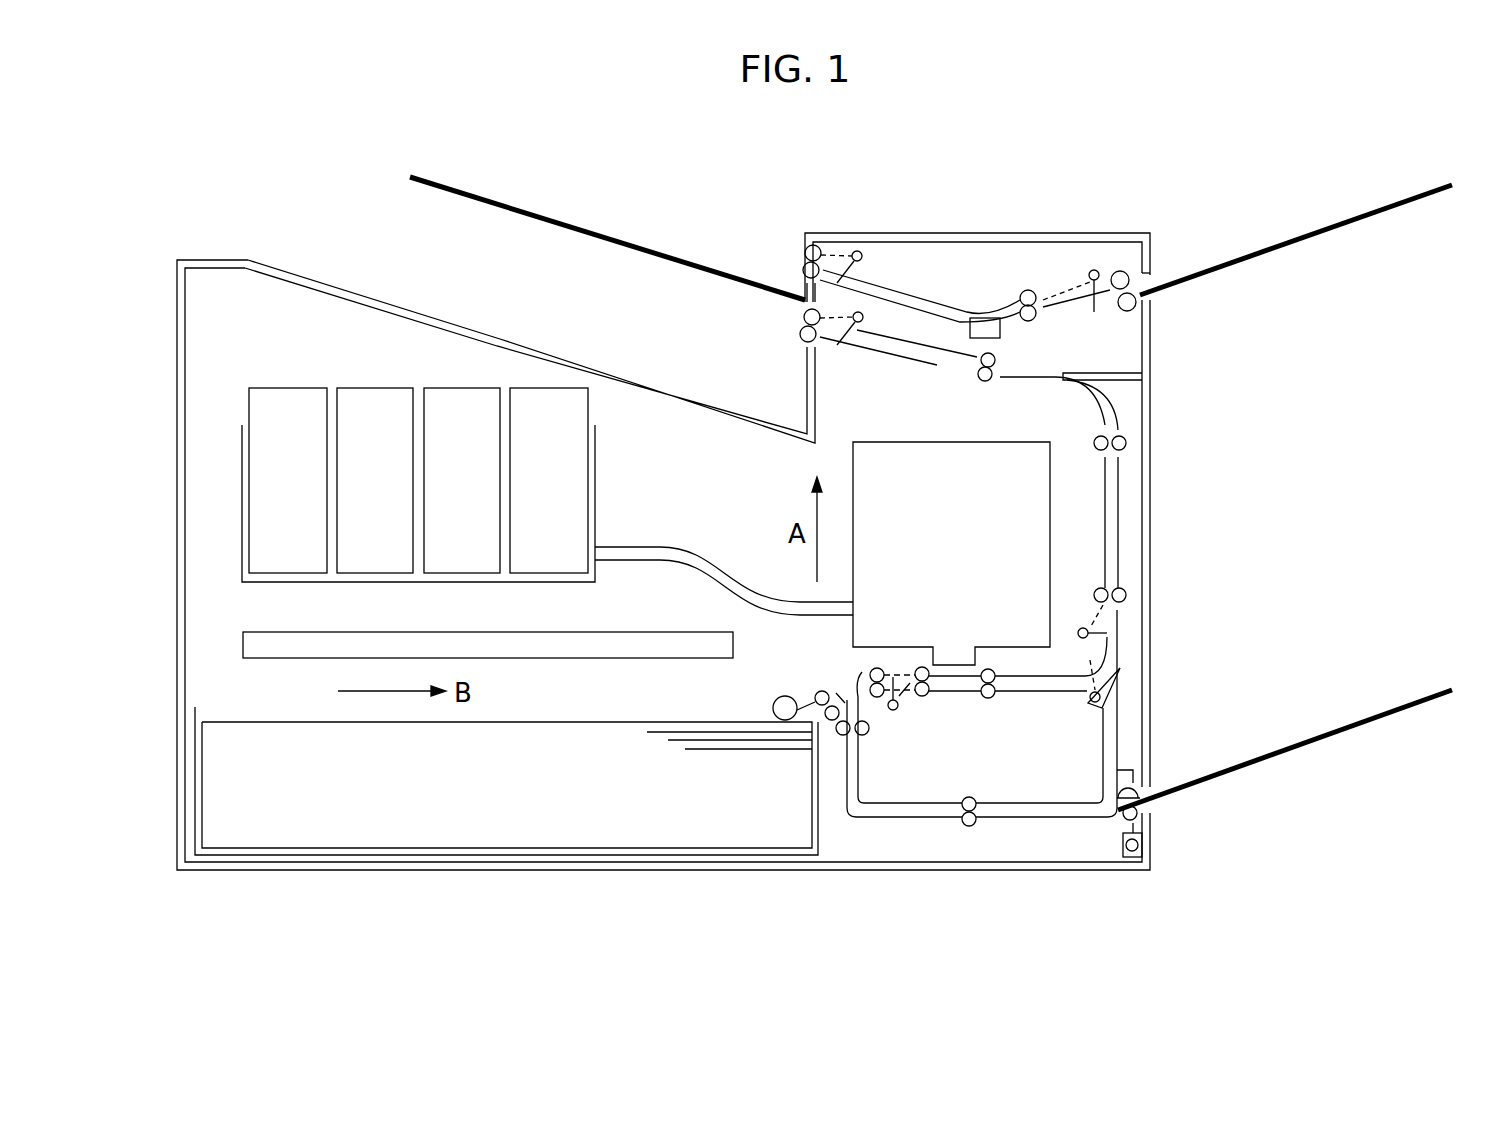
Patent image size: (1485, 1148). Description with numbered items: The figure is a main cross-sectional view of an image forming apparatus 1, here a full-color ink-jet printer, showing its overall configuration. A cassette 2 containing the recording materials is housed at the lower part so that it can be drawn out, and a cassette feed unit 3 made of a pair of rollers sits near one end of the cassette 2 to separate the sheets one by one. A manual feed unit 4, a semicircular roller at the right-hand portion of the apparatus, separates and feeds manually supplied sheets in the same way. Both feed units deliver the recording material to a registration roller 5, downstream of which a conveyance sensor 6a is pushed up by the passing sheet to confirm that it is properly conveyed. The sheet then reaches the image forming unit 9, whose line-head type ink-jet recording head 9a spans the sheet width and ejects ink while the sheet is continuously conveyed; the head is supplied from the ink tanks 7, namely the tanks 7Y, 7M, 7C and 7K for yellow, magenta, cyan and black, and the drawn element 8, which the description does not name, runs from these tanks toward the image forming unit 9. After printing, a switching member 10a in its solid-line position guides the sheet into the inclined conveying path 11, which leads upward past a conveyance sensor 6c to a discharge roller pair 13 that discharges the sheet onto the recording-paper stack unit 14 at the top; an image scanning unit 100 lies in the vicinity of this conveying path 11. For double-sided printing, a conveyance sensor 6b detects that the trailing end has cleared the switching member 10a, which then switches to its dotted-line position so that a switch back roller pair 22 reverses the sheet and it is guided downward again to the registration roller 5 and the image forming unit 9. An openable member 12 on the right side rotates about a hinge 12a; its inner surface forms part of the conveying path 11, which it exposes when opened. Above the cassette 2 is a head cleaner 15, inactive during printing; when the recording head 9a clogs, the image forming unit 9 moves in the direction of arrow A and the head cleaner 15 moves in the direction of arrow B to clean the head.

The image forming apparatus 1 is at (262, 155).
The recording-paper stack unit 14 is at (375, 300).
The ink tanks 7 is at (346, 485).
The ink tank 7Y is at (288, 480).
The ink tank 7M is at (375, 480).
The ink tank 7C is at (462, 480).
The ink tank 7K is at (549, 480).
The head cleaner 15 is at (243, 648).
The cassette 2 is at (418, 787).
The cassette feed unit 3 is at (830, 712).
The conveyance path 8 is at (673, 567).
The image forming unit 9 is at (917, 465).
The ink-jet recording head 9a is at (975, 655).
The registration roller 5 is at (873, 703).
The conveyance sensor 6a is at (905, 702).
The conveyance sensor 6b is at (1123, 622).
The conveyance sensor 6c is at (862, 313).
The switching member 10a is at (1117, 697).
The conveying path 11 is at (937, 367).
The switch back roller pair 22 is at (1123, 597).
The manual feed unit 4 is at (1150, 790).
The openable member 12 is at (1145, 393).
The hinge 12a is at (1137, 847).
The discharge roller pair 13 is at (800, 318).
The image scanning unit 100 is at (987, 273).